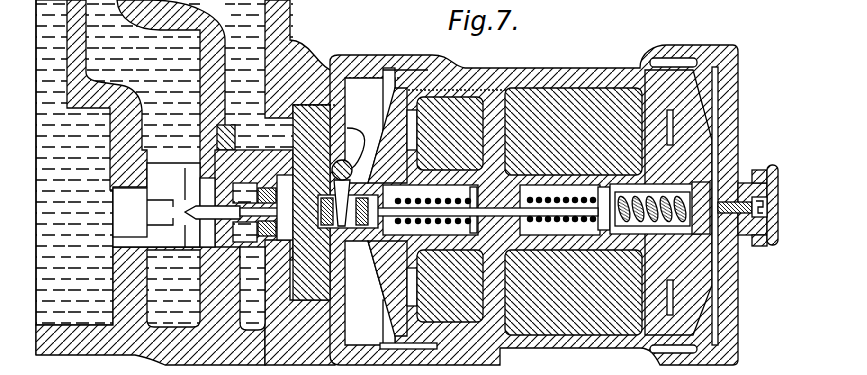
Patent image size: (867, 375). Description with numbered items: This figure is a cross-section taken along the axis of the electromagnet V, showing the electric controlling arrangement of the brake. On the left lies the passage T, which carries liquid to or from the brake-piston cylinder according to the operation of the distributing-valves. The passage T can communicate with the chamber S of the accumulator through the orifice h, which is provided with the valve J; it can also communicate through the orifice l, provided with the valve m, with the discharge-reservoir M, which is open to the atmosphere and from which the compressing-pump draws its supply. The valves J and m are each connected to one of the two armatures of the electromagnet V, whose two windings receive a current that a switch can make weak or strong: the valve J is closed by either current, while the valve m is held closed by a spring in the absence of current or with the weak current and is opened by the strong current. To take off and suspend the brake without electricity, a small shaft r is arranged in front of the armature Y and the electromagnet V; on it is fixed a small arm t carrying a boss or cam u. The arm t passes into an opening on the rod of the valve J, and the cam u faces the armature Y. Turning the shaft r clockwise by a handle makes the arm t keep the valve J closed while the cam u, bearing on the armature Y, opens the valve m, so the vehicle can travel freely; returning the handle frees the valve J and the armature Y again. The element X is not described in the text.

The chamber of the accumulator S is at (74, 177).
The passage T is at (143, 75).
The discharge-reservoir M is at (259, 75).
The orifice h is at (156, 205).
The valve J is at (257, 212).
The orifice l is at (258, 214).
The valve m is at (313, 202).
The small shaft r is at (338, 163).
The boss or cam u is at (370, 130).
The small arm t is at (342, 203).
The armature Y is at (387, 212).
The electromagnet V is at (534, 205).
The follower X is at (678, 202).